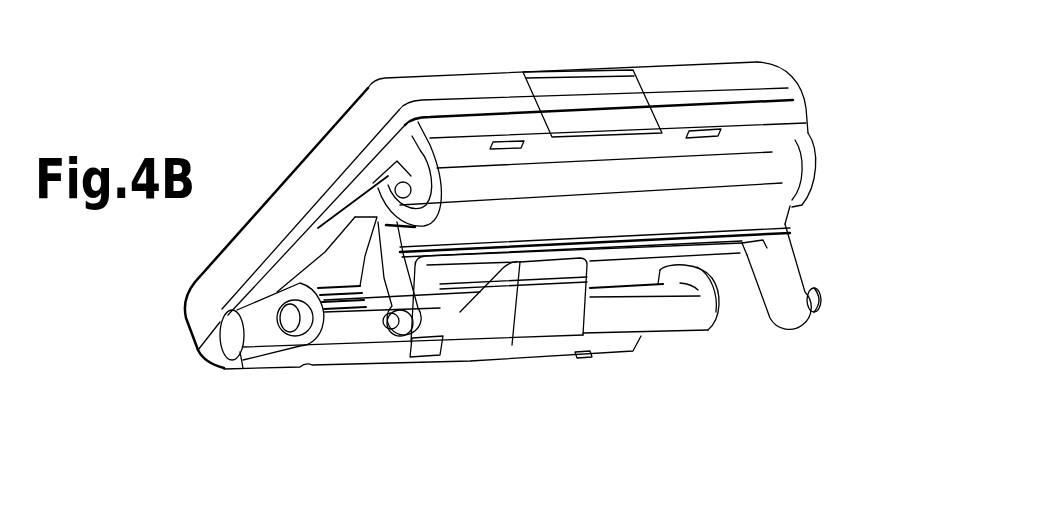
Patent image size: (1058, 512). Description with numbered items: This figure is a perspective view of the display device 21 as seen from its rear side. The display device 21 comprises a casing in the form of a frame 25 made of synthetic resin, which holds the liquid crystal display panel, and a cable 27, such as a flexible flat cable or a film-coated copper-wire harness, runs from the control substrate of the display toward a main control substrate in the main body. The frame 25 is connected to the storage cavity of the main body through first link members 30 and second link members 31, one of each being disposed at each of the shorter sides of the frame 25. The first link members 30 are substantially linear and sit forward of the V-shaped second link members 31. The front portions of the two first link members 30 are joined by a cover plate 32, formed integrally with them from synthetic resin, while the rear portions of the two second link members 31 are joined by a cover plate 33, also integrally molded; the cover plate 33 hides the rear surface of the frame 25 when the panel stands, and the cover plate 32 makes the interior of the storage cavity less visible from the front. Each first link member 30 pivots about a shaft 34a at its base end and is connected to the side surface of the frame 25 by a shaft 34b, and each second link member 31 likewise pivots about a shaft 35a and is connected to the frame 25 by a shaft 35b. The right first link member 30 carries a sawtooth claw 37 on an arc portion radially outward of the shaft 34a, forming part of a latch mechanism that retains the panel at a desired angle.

The display device 21 is at (752, 53).
The frame 25 is at (757, 92).
The cable 27 is at (545, 320).
The first link member 30 is at (271, 330).
The second link member 31 is at (396, 288).
The cover plate 32 is at (661, 318).
The cover plate 33 is at (740, 218).
The shaft 34a is at (297, 322).
The shaft 34b is at (217, 360).
The shaft 35a is at (394, 334).
The shaft 35b is at (396, 182).
The sawtooth claw 37 is at (338, 290).